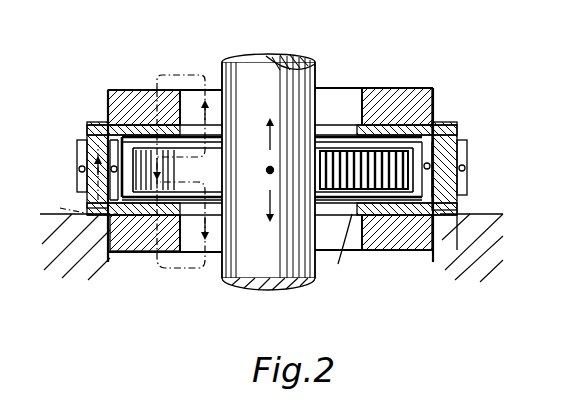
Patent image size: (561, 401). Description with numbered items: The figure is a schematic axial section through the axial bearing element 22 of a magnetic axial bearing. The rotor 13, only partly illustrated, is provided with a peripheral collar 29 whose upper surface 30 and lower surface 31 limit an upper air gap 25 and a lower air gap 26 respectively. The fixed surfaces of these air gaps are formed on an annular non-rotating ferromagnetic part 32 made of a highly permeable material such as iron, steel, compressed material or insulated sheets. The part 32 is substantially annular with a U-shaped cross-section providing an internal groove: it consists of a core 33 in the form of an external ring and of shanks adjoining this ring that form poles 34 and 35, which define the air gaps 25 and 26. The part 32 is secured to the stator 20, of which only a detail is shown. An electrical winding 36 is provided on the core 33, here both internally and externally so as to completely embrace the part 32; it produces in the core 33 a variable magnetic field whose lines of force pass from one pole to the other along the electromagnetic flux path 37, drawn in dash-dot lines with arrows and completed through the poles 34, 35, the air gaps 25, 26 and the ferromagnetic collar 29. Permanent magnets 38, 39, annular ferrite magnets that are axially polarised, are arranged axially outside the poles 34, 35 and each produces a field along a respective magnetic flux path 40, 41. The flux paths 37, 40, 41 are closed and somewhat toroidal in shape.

The rotor 13 is at (258, 256).
The stator 20 is at (79, 254).
The axial bearing element 22 is at (452, 103).
The upper air gap 25 is at (335, 135).
The lower air gap 26 is at (390, 212).
The peripheral collar 29 is at (390, 172).
The upper surface of the collar 30 is at (374, 150).
The lower surface of the collar 31 is at (344, 254).
The annular non-rotating ferromagnetic part 32 is at (464, 220).
The core 33 is at (465, 158).
The upper pole 34 is at (412, 130).
The lower pole 35 is at (425, 252).
The electrical winding 36 is at (78, 167).
The electromagnetic flux path 37 is at (84, 208).
The permanent magnet 38 is at (114, 92).
The permanent magnet 39 is at (127, 254).
The magnetic flux path 40 is at (180, 73).
The magnetic flux path 41 is at (182, 270).